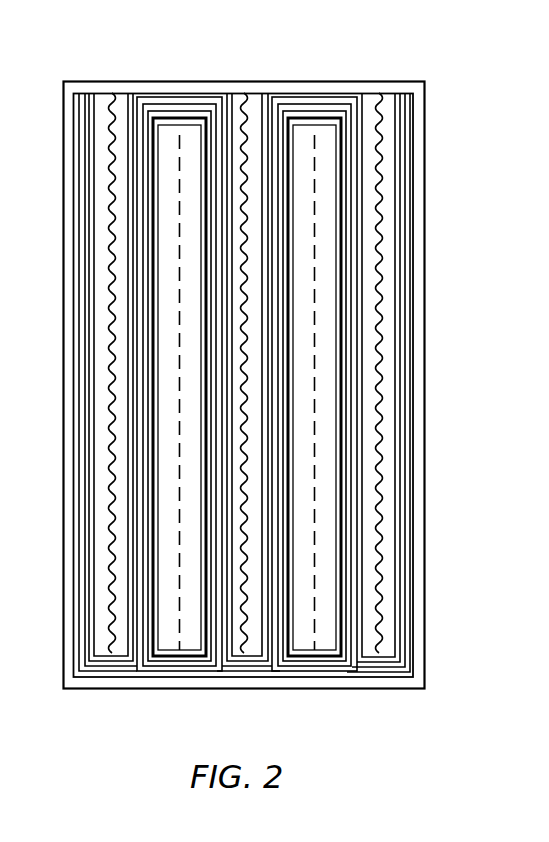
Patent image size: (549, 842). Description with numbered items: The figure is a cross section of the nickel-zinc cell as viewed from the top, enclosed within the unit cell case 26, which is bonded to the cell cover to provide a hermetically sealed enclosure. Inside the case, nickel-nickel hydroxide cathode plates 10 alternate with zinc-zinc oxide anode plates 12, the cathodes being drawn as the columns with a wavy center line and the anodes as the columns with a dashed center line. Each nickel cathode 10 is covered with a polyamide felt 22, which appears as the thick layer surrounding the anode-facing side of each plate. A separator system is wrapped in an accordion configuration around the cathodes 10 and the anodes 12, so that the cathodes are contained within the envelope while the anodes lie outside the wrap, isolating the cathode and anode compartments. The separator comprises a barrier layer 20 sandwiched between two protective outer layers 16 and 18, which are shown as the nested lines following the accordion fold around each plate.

The nickel-nickel hydroxide cathode plate 10 is at (103, 648).
The zinc-zinc oxide anode plate 12 is at (240, 386).
The protective outer layer 16 is at (176, 112).
The protective outer layer 18 is at (148, 98).
The barrier layer 20 is at (160, 105).
The polyamide felt 22 is at (195, 119).
The unit cell case 26 is at (67, 224).